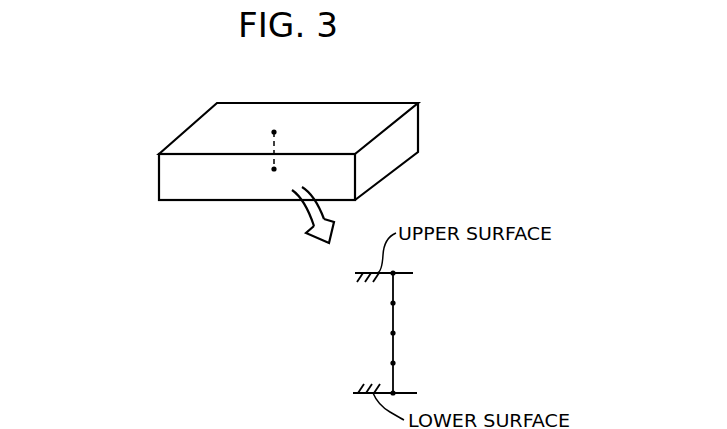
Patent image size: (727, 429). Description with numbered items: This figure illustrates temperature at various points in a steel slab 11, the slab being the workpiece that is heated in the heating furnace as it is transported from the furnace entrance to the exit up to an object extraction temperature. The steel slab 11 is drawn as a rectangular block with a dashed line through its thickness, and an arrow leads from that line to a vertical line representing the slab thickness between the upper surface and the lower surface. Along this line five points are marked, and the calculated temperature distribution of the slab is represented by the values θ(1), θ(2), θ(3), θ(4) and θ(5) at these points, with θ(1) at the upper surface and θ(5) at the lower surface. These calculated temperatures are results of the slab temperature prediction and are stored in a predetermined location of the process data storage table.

The steel slab 11 is at (383, 112).
The calculated temperature θ 1 is at (433, 274).
The calculated temperature θ 2 is at (433, 304).
The calculated temperature θ 3 is at (433, 334).
The calculated temperature θ 4 is at (433, 364).
The calculated temperature θ 5 is at (433, 394).